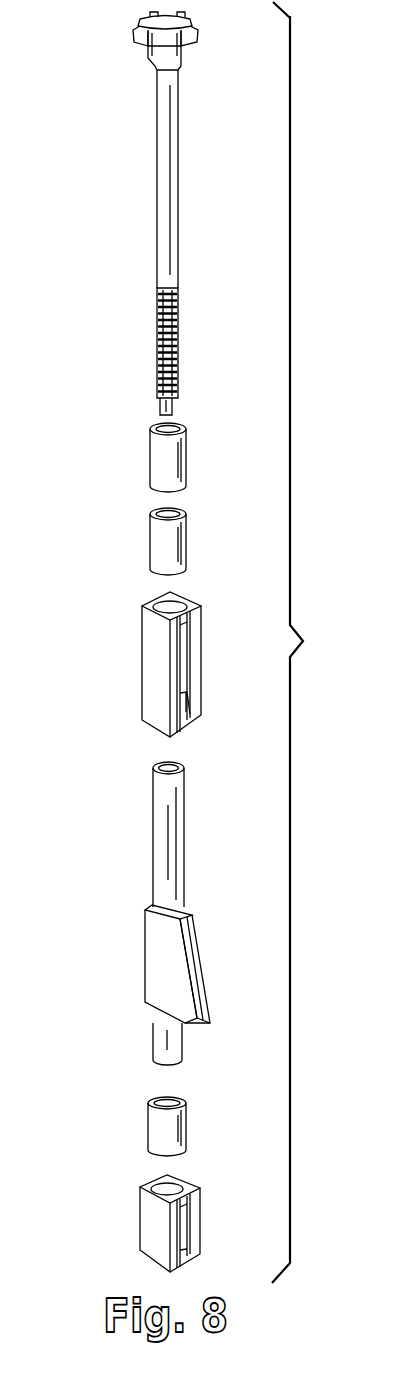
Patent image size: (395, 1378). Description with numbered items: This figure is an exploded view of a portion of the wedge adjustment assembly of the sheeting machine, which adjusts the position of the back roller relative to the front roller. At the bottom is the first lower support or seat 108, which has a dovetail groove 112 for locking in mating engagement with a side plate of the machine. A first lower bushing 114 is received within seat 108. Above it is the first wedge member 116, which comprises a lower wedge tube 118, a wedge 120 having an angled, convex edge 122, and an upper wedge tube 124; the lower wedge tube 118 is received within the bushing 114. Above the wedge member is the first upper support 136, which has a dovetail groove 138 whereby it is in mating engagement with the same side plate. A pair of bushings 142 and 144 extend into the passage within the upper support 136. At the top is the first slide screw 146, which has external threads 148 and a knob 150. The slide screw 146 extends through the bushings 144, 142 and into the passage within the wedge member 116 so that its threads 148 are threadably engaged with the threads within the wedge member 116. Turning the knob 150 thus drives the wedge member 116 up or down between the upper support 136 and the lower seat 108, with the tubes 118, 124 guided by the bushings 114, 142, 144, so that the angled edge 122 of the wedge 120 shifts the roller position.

The first lower support or seat 108 is at (169, 1223).
The dovetail groove 112 is at (195, 1235).
The first lower bushing 114 is at (152, 1122).
The first wedge member 116 is at (174, 913).
The lower wedge tube 118 is at (160, 1022).
The wedge 120 is at (169, 964).
The angled, convex edge 122 is at (193, 935).
The upper wedge tube 124 is at (160, 822).
The first upper support 136 is at (170, 664).
The dovetail groove 138 is at (187, 658).
The bushing 142 is at (150, 545).
The bushing 144 is at (150, 455).
The first slide screw 146 is at (165, 183).
The external threads 148 is at (157, 348).
The knob 150 is at (142, 28).